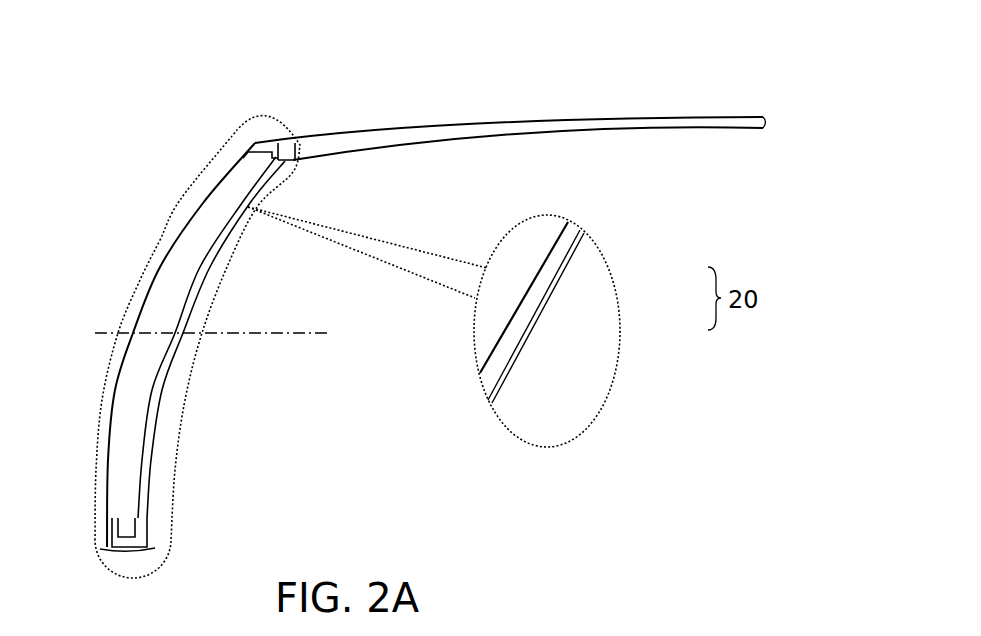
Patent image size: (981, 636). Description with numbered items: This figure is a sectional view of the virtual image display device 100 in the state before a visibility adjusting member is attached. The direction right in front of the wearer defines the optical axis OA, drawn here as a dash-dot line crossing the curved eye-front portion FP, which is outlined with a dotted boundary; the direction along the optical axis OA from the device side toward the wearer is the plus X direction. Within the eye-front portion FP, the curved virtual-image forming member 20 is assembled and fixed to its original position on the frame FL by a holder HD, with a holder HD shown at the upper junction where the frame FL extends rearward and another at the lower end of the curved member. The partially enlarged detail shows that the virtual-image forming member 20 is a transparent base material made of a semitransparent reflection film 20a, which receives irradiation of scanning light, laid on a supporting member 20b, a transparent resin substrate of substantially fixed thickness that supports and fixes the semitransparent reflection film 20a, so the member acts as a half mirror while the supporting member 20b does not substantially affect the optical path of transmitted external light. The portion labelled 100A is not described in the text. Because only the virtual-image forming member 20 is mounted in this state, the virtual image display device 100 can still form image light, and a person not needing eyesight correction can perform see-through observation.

The virtual image display device 100 is at (180, 94).
The display unit 100A is at (174, 194).
The holder HD is at (283, 147).
The frame FL is at (470, 137).
The eye-front portion FP is at (147, 257).
The optical axis OA is at (223, 337).
The virtual-image forming member 20 is at (205, 283).
The semitransparent reflection film 20a is at (573, 252).
The supporting member 20b is at (538, 285).